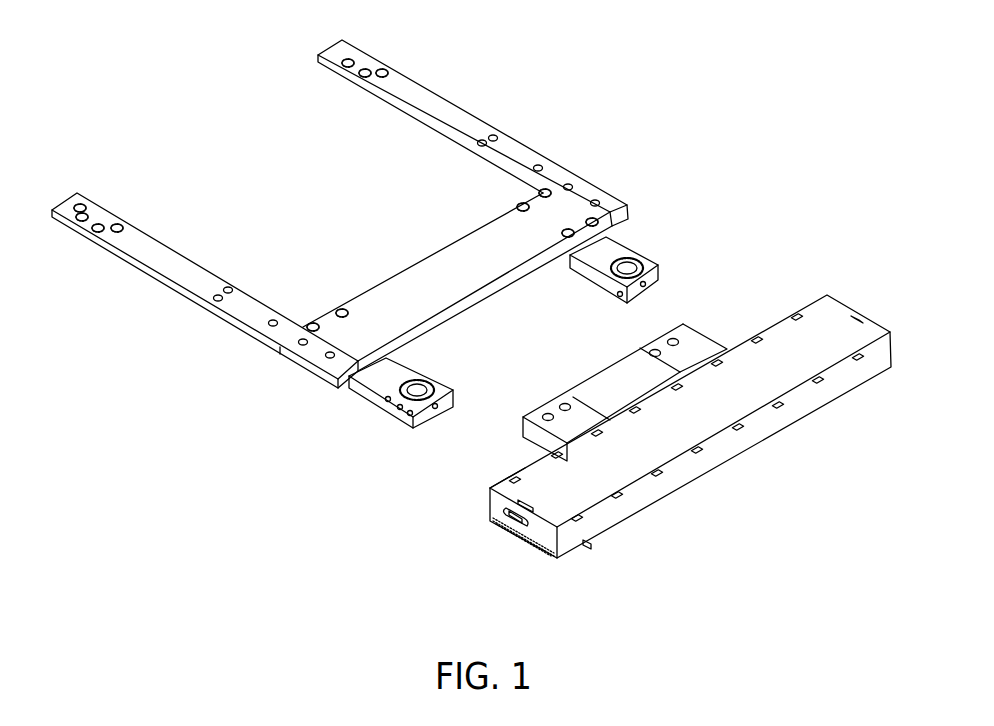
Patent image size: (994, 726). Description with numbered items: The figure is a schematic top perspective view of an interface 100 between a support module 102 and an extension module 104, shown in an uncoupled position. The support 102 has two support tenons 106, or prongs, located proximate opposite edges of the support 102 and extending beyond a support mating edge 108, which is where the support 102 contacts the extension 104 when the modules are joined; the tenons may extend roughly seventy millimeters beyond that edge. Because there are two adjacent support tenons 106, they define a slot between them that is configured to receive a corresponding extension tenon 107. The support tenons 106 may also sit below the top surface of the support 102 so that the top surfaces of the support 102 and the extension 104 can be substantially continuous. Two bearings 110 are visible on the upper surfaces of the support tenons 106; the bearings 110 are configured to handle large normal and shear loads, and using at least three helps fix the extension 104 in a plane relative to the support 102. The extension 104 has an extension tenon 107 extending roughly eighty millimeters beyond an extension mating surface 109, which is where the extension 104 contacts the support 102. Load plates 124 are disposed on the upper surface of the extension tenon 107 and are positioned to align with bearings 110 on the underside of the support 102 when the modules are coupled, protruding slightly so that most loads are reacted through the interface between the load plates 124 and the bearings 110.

The interface 100 is at (690, 271).
The support module 102 is at (463, 117).
The extension module 104 is at (735, 445).
The support tenon 106 is at (610, 250).
The extension tenon 107 is at (612, 377).
The support mating edge 108 is at (494, 255).
The extension mating surface 109 is at (525, 470).
The bearing 110 is at (638, 258).
The load plate 124 is at (685, 347).